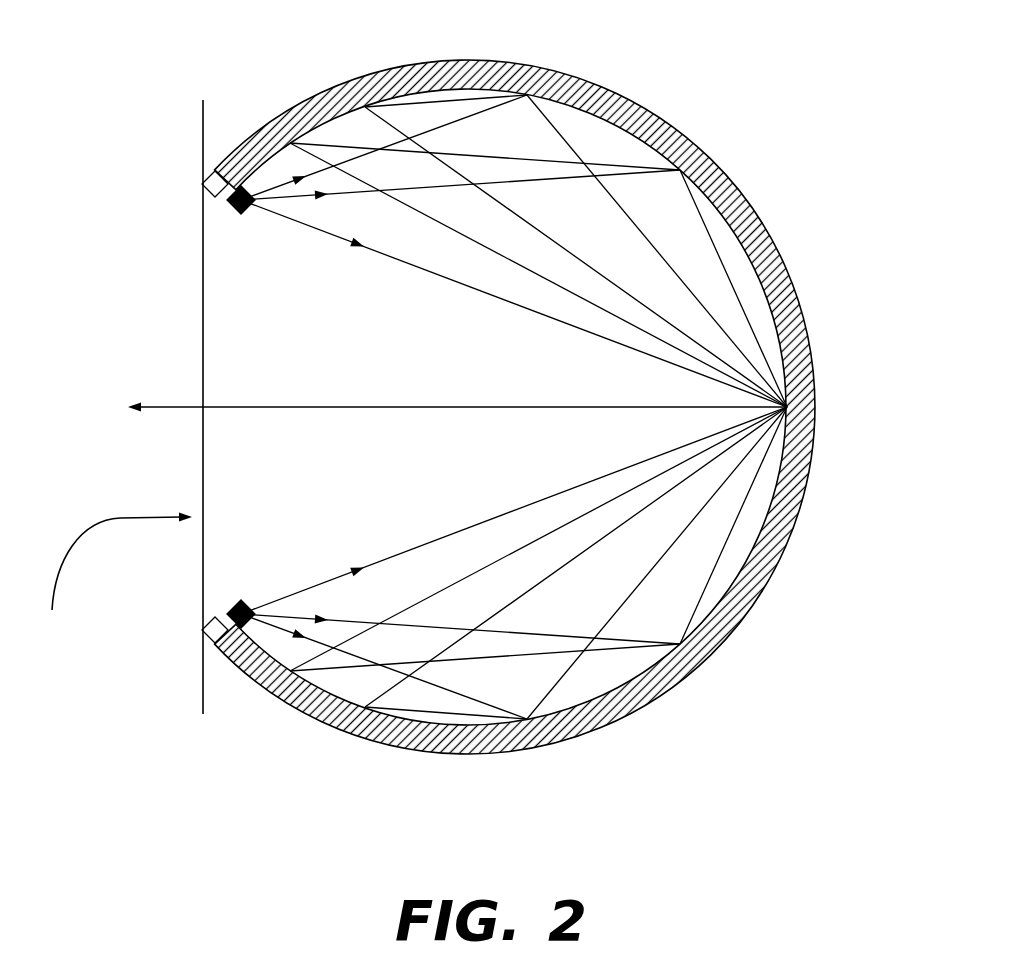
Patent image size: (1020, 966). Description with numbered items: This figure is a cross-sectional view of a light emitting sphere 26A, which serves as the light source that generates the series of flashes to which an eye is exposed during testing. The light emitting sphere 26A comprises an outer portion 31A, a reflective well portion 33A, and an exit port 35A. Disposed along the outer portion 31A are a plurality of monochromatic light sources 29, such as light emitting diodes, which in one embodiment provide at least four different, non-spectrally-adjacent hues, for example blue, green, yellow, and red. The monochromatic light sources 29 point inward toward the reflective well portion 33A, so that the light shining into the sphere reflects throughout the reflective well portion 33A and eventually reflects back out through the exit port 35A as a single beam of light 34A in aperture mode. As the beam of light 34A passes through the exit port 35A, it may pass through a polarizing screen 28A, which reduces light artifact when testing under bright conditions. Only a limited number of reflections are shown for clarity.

The light emitting sphere 26A is at (577, 407).
The polarizing screen 28A is at (203, 155).
The monochromatic light sources 29 is at (238, 205).
The outer portion 31A is at (222, 182).
The reflective well portion 33A is at (763, 572).
The beam of light 34A is at (307, 407).
The exit port 35A is at (108, 585).